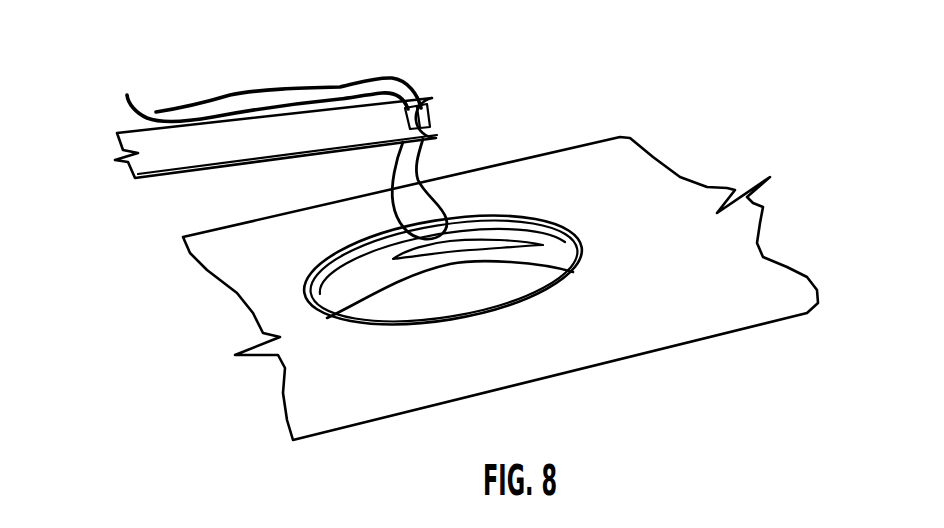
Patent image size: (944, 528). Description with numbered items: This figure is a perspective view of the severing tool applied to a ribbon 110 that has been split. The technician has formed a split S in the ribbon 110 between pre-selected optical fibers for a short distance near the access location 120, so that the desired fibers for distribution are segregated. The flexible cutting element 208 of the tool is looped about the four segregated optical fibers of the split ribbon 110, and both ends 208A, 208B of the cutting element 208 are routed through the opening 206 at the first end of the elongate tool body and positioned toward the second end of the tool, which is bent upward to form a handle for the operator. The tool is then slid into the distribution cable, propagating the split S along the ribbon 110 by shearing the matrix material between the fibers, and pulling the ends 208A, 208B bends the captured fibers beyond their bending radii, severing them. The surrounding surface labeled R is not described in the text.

The end of cutting element 208A is at (140, 109).
The end of cutting element 208B is at (170, 113).
The cutting element 208 is at (236, 141).
The opening 206 is at (438, 200).
The split S is at (533, 237).
The sheet region R is at (668, 318).
The ribbon 110 is at (356, 292).
The access location 120 is at (537, 280).